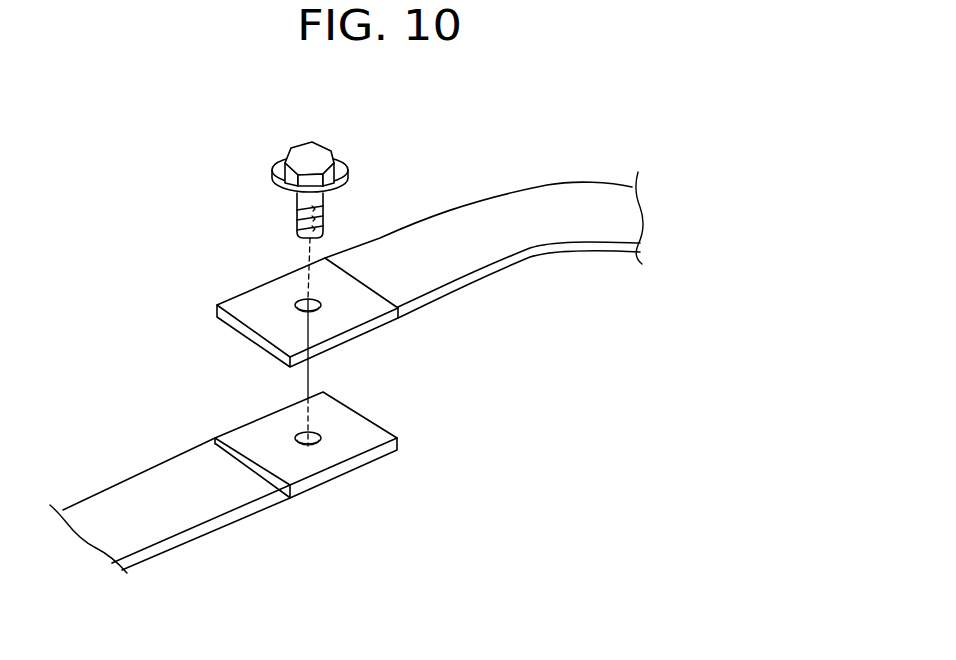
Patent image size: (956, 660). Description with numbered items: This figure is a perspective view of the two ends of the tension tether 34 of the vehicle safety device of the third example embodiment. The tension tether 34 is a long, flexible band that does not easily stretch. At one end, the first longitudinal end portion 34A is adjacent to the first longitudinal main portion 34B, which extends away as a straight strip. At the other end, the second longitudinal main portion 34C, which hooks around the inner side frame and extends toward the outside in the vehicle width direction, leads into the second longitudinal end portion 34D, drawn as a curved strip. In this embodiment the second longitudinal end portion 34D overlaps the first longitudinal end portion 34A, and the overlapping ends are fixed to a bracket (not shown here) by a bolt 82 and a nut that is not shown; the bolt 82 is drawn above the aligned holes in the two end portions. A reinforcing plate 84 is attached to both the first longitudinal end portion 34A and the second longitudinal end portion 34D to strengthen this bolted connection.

The tension tether 34 is at (346, 370).
The first longitudinal end portion 34A is at (328, 484).
The first longitudinal main portion 34B is at (112, 488).
The second longitudinal main portion 34C is at (482, 196).
The second longitudinal end portion 34D is at (248, 284).
The bolt 82 is at (322, 144).
The reinforcing plate 84 is at (372, 332).